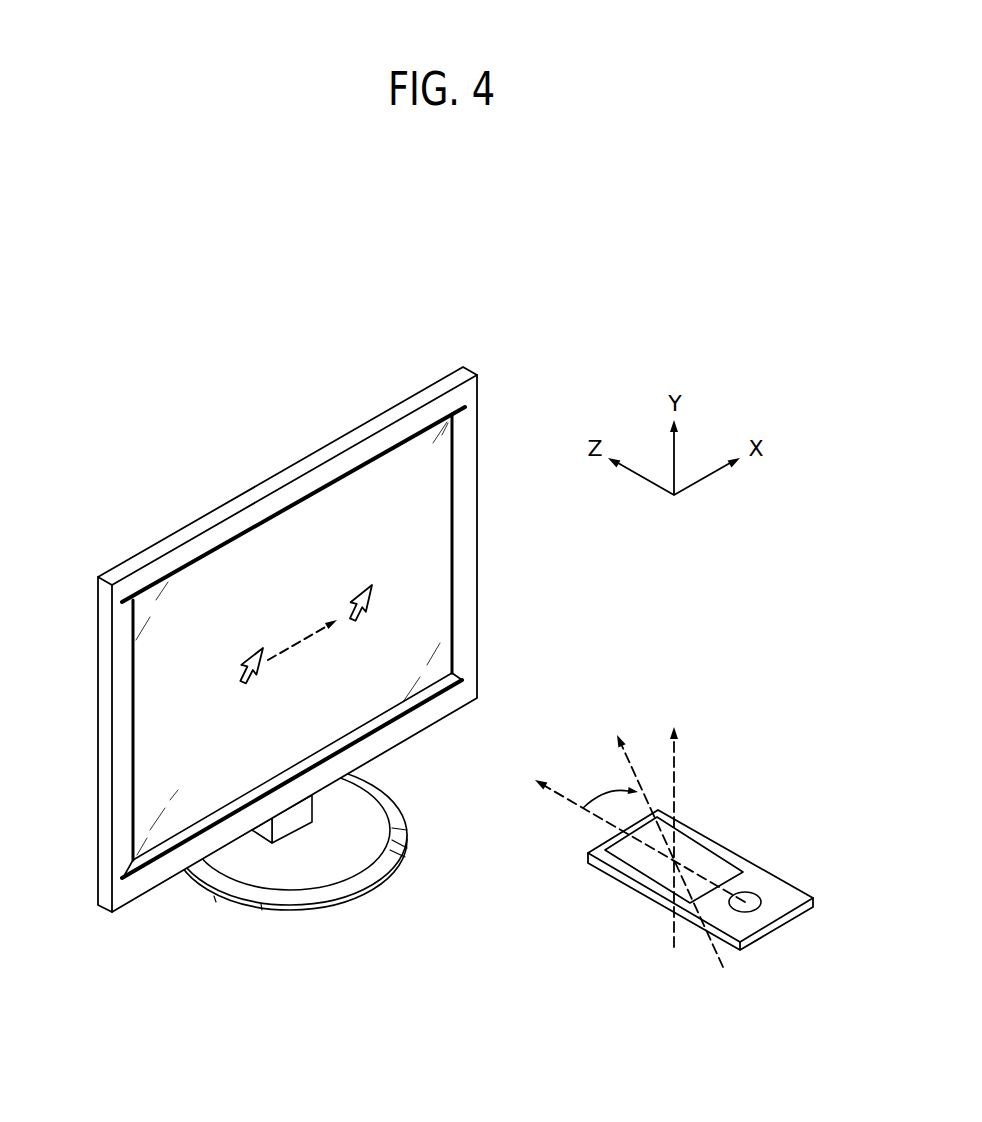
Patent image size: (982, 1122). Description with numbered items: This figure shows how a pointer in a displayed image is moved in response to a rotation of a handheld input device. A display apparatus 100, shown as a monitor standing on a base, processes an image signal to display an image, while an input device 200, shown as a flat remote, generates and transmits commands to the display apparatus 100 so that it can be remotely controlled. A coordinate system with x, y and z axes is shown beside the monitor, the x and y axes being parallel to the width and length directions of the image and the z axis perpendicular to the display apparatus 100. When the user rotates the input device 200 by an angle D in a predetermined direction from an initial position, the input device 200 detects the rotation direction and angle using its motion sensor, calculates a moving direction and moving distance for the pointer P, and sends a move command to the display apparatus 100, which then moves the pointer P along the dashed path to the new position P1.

The display apparatus 100 is at (484, 355).
The input device 200 is at (638, 927).
The pointer P is at (247, 657).
The position of the pointer after movement P1 is at (357, 593).
The rotation angle D is at (610, 789).